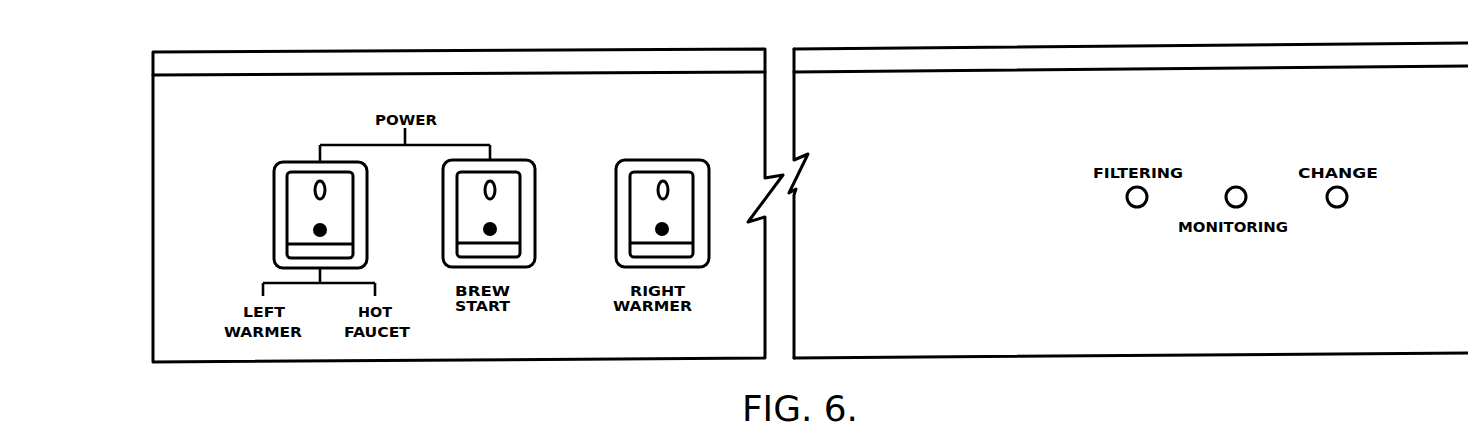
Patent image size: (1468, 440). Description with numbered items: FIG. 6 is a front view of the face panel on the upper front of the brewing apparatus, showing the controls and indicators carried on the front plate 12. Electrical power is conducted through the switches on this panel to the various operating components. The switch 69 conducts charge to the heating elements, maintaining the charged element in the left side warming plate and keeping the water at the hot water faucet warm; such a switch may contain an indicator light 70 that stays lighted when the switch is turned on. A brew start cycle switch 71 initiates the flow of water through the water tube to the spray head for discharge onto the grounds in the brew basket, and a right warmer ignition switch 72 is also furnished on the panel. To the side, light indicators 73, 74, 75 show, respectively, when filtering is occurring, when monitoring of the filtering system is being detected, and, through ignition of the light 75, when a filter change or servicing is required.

The front plate 12 is at (739, 98).
The switch 69 is at (299, 210).
The indicator light 70 is at (326, 190).
The brew start cycle switch 71 is at (513, 212).
The right warmer ignition switch 72 is at (687, 211).
The light indicator 73 is at (1137, 208).
The light indicator 74 is at (1279, 150).
The light indicator 75 is at (1337, 207).